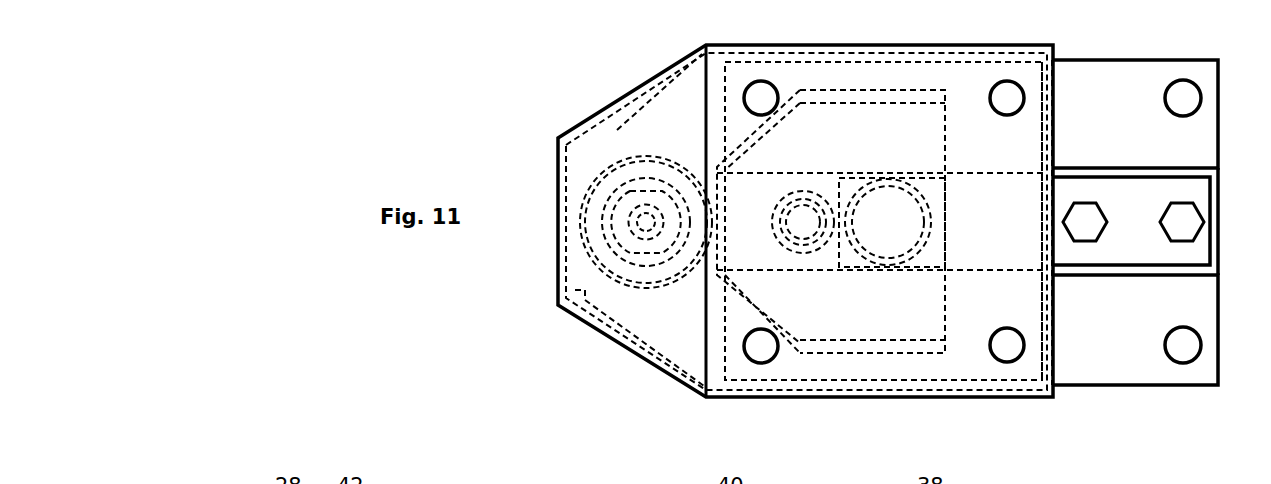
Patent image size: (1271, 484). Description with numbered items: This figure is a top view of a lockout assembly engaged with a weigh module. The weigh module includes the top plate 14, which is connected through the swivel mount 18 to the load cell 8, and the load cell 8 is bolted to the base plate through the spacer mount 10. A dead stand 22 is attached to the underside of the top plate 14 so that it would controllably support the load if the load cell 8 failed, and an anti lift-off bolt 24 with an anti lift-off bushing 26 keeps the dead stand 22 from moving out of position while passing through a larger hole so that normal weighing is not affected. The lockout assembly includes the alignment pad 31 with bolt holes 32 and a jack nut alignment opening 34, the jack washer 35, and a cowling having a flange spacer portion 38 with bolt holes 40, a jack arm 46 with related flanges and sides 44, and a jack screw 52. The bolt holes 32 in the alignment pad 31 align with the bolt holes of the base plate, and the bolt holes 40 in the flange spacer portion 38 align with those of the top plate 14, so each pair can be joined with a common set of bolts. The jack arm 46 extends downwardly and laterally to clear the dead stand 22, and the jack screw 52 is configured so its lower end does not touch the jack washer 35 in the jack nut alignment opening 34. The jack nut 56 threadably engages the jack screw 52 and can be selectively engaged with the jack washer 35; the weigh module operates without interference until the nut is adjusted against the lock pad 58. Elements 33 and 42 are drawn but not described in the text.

The load cell 8 is at (970, 270).
The spacer mount 10 is at (1157, 168).
The top plate 14 is at (1043, 154).
The swivel mount 18 is at (850, 237).
The dead stand 22 is at (716, 255).
The anti lift-off bolt 24 is at (790, 212).
The anti lift-off bushing 26 is at (815, 238).
The alignment pad 31 is at (1221, 301).
The bolt holes 32 is at (1170, 108).
The internal wall 33 is at (617, 130).
The jack nut alignment opening 34 is at (665, 157).
The jack washer 35 is at (602, 176).
The flange spacer portion 38 is at (841, 143).
The bolt holes 40 is at (774, 89).
The end wall 42 is at (1048, 300).
The flanges and sides 44 is at (927, 53).
The jack arm 46 is at (583, 298).
The jack screw 52 is at (647, 239).
The jack nut 56 is at (635, 191).
The lock pad 58 is at (663, 263).